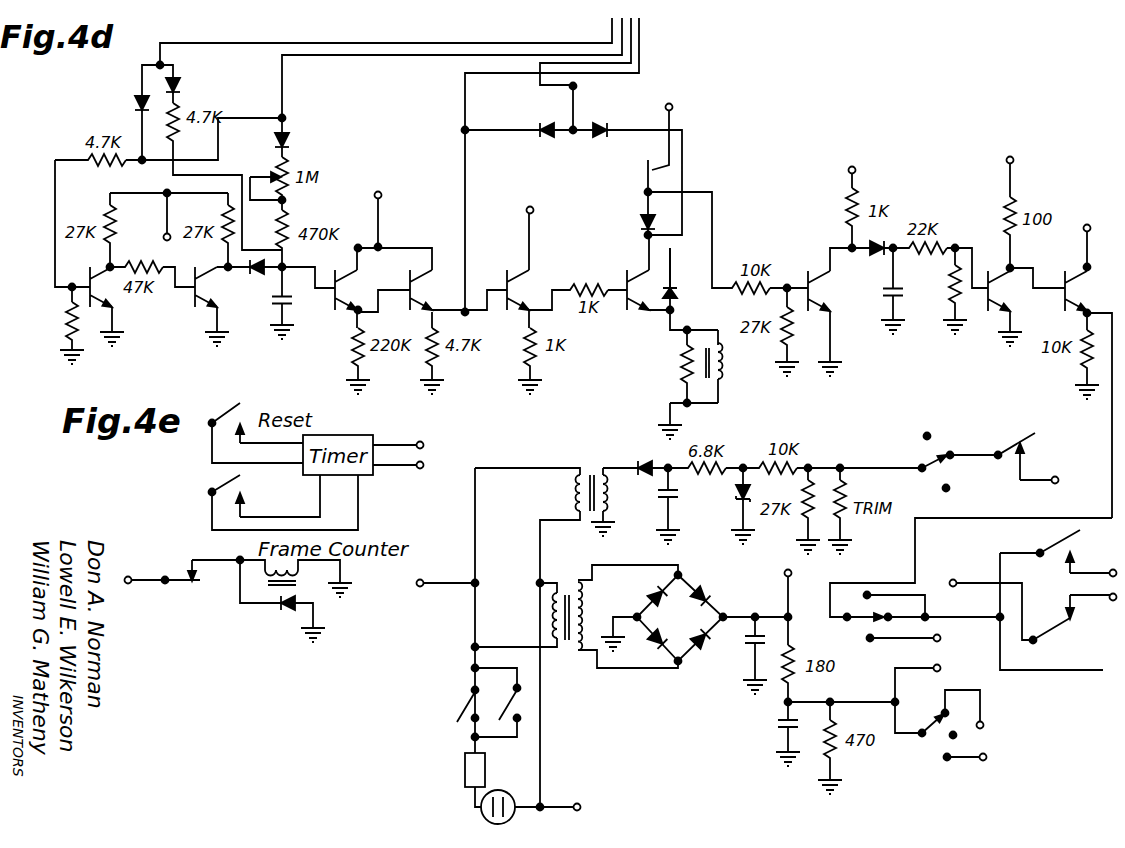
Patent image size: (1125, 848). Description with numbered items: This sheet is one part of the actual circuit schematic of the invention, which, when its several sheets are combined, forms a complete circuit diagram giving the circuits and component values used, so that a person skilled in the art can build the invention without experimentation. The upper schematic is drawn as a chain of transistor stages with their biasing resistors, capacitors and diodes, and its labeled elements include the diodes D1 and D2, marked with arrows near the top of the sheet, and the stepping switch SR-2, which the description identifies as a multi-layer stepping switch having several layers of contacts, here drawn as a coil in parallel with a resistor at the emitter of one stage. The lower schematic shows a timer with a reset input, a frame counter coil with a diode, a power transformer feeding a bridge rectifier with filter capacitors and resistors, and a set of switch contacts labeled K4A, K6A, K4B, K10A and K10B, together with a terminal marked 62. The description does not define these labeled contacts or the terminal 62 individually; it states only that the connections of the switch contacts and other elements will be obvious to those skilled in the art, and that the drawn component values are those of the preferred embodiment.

In FIG. 4D, the diode D1 is at (293, 70).
In FIG. 4D, the diode D2 is at (218, 50).
In FIG. 4D, the stepping switch SR-2 is at (724, 364).
In FIG. 4E, the relay contact K4A is at (224, 413).
In FIG. 4E, the relay contact K6A is at (248, 496).
In FIG. 4E, the relay contact K4B is at (163, 566).
In FIG. 4E, the relay contact K10A is at (1033, 593).
In FIG. 4E, the relay contact K10B is at (986, 454).
In FIG. 4E, the terminal - 62 is at (1072, 481).